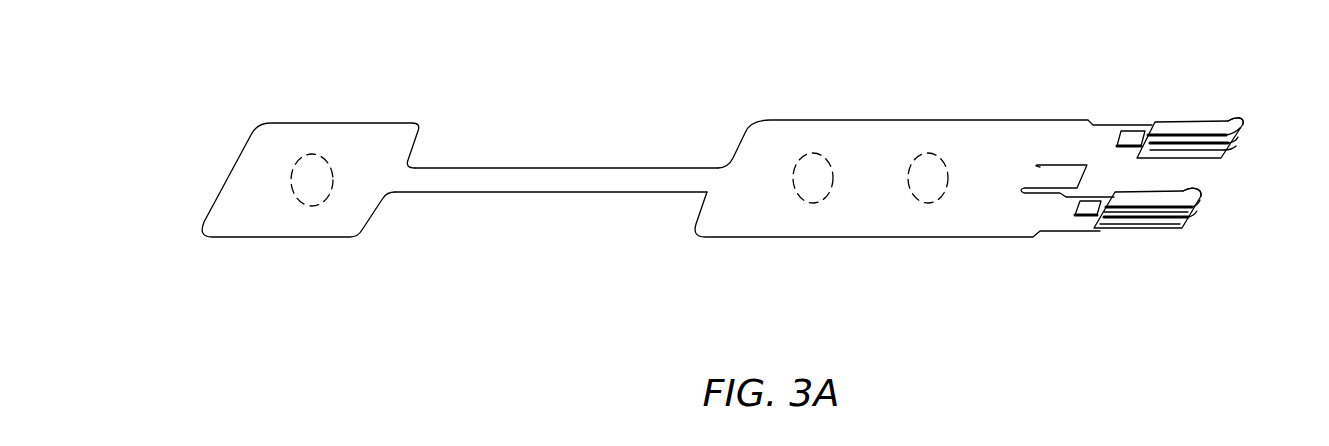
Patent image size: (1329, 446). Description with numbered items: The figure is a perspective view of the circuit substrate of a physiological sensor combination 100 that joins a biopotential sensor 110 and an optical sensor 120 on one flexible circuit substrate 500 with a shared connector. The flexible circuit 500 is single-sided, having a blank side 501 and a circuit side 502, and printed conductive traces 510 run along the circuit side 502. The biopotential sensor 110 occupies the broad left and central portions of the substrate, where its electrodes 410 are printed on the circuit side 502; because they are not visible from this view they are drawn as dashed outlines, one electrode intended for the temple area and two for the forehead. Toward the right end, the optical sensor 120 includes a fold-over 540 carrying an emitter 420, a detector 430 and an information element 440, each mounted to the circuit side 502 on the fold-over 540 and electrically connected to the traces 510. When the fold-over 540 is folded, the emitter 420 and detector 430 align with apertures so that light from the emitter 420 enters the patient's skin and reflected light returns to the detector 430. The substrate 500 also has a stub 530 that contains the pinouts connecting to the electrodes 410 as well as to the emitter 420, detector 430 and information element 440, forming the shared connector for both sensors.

The physiological sensor combination 100 is at (741, 179).
The biopotential sensor 110 is at (677, 219).
The optical sensor 120 is at (1136, 215).
The electrodes 410 is at (333, 167).
The emitter 420 is at (1131, 131).
The detector 430 is at (1078, 209).
The information element 440 is at (1182, 136).
The flexible circuit substrate 500 is at (777, 137).
The blank side 501 is at (528, 181).
The circuit side 502 is at (582, 199).
The conductive traces 510 is at (1165, 144).
The stub 530 is at (1033, 177).
The fold-over 540 is at (1205, 202).